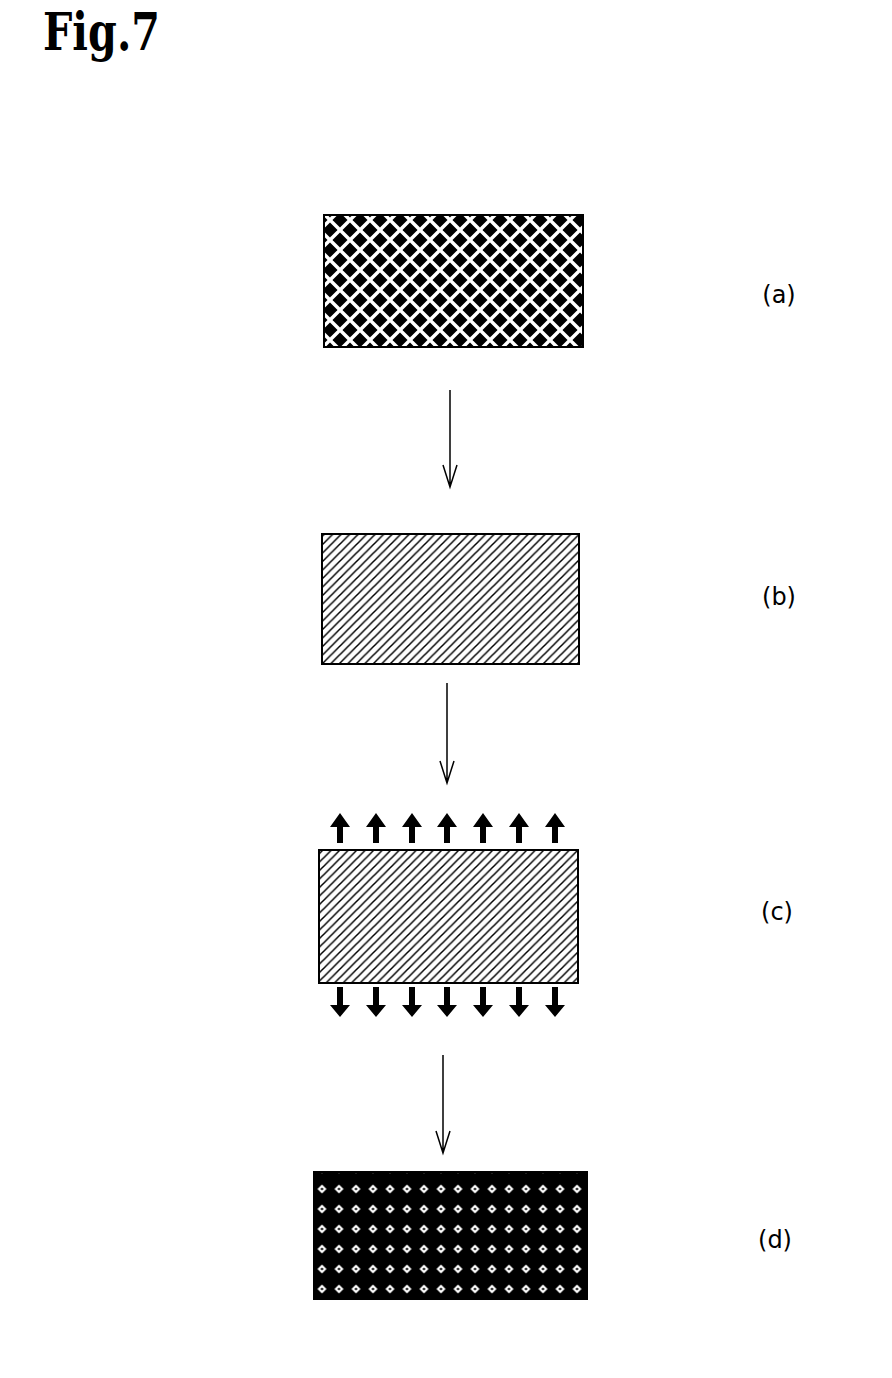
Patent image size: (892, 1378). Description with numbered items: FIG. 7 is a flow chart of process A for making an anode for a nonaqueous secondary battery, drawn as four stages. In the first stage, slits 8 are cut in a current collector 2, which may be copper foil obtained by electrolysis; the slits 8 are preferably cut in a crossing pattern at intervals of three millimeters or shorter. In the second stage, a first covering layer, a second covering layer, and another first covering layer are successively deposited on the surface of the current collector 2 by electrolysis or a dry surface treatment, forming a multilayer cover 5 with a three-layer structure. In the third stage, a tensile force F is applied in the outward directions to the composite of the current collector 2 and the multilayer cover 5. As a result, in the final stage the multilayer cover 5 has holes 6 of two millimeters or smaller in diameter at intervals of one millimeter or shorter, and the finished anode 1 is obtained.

The current collector 2 is at (478, 261).
The slits 8 is at (583, 247).
The multilayer cover 5 is at (497, 898).
The porous sheet product 1 is at (475, 1217).
The holes 6 is at (587, 1270).
The tensile force F is at (563, 823).